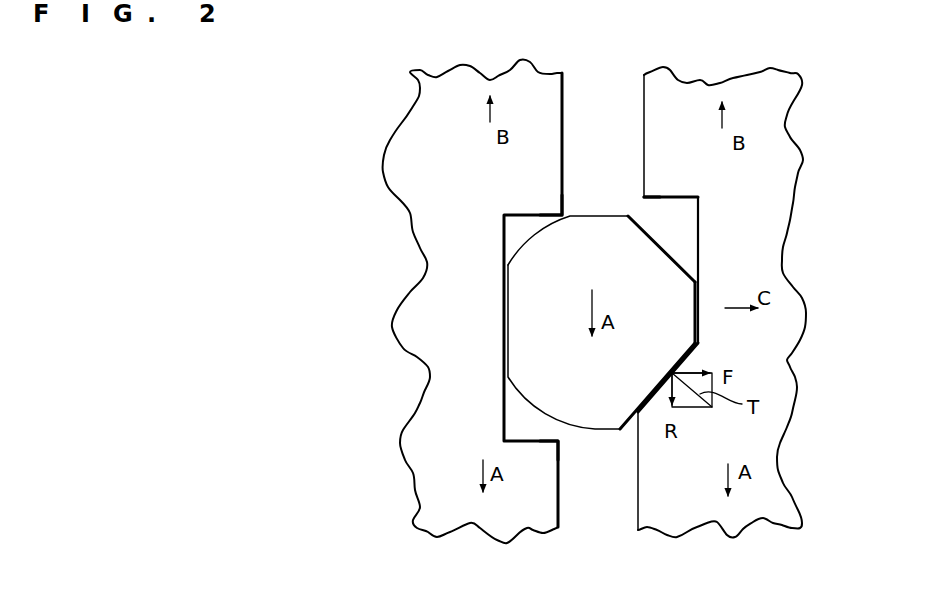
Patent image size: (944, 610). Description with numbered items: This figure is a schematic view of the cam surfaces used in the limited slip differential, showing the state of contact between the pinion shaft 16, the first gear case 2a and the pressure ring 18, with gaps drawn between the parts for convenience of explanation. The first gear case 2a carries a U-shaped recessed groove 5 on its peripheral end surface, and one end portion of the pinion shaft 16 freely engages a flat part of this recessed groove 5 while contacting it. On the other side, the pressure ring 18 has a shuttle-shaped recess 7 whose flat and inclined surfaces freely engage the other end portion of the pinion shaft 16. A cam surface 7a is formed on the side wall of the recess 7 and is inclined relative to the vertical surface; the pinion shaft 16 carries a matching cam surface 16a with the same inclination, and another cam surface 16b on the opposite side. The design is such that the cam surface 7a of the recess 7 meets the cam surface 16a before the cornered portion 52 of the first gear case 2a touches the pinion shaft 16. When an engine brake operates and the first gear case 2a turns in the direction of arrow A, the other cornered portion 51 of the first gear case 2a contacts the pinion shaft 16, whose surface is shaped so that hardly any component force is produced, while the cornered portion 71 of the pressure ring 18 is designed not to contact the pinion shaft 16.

The first gear case 2a is at (382, 108).
The pressure ring 18 is at (826, 126).
The recessed groove 5 is at (502, 406).
The cornered portion 51 is at (568, 214).
The cornered portion 52 is at (573, 445).
The recess 7 is at (689, 278).
The cam surface 7a is at (683, 338).
The cornered portion 71 is at (644, 198).
The pinion shaft 16 is at (592, 430).
The cam surface 16a is at (648, 406).
The cam surface 16b is at (686, 276).